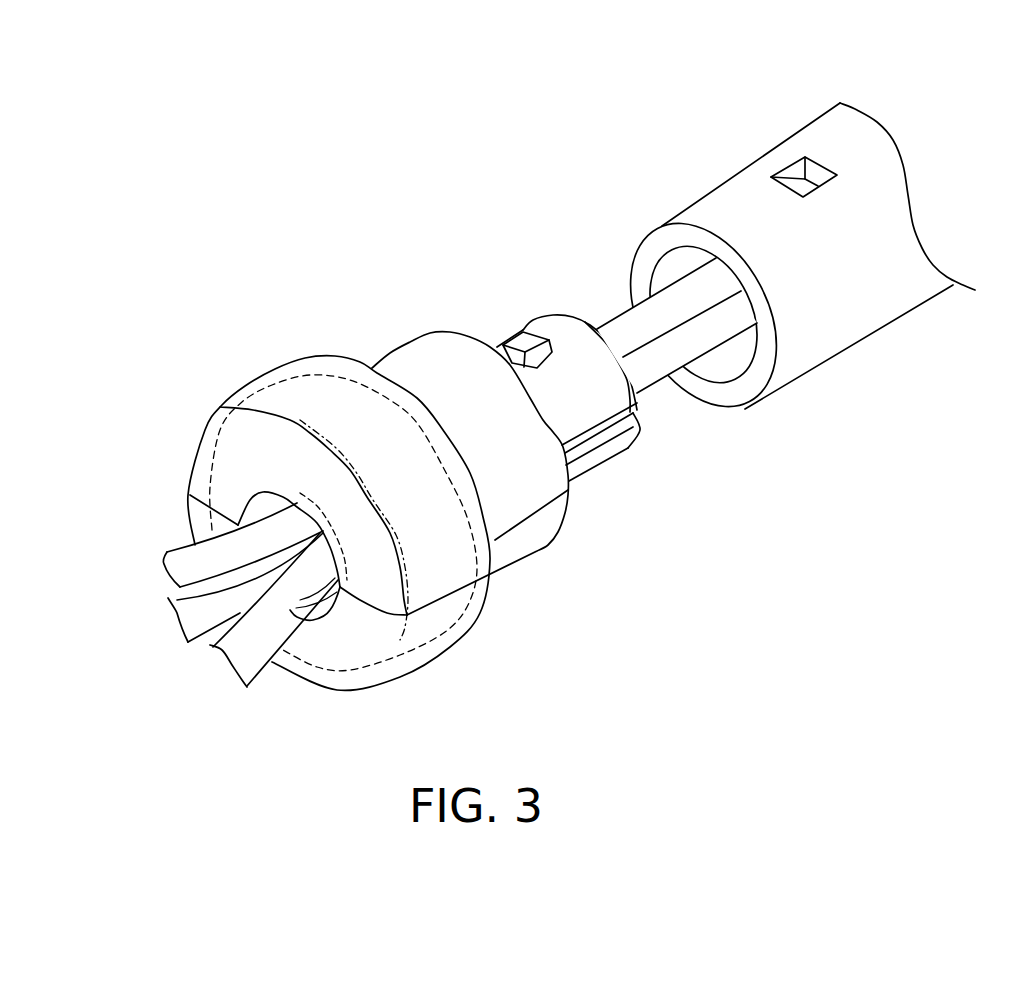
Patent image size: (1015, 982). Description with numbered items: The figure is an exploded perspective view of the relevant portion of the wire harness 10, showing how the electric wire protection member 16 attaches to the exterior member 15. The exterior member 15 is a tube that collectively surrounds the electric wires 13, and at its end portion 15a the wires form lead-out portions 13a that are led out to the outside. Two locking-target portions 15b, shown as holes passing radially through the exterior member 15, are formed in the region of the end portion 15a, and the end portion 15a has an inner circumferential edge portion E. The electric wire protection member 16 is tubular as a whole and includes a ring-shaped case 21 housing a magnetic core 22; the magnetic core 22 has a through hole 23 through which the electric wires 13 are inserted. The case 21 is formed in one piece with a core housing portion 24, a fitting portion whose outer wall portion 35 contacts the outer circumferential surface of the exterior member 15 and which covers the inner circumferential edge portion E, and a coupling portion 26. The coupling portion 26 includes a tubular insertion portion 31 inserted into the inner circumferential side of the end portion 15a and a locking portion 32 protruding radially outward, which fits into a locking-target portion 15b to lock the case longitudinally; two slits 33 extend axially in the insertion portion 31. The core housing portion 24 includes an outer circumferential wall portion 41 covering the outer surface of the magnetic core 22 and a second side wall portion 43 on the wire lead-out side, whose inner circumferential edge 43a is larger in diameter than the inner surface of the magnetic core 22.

The wire harness 10 is at (313, 239).
The electric wire 13 is at (624, 322).
The lead-out portion 13a is at (203, 662).
The exterior member 15 is at (867, 317).
The end portion 15a is at (702, 213).
The locking-target portion 15b is at (793, 173).
The inner circumferential edge portion E is at (668, 255).
The electric wire protection member 16 is at (216, 408).
The case 21 is at (487, 604).
The magnetic core 22 is at (293, 387).
The through hole 23 is at (320, 507).
The core housing portion 24 is at (343, 367).
The coupling portion 26 is at (587, 470).
The insertion portion 31 is at (562, 325).
The locking portion 32 is at (522, 340).
The slit 33 is at (602, 437).
The outer wall portion 35 is at (420, 353).
The outer circumferential wall portion 41 is at (423, 653).
The second side wall portion 43 is at (320, 650).
The inner circumferential edge 43a is at (265, 490).